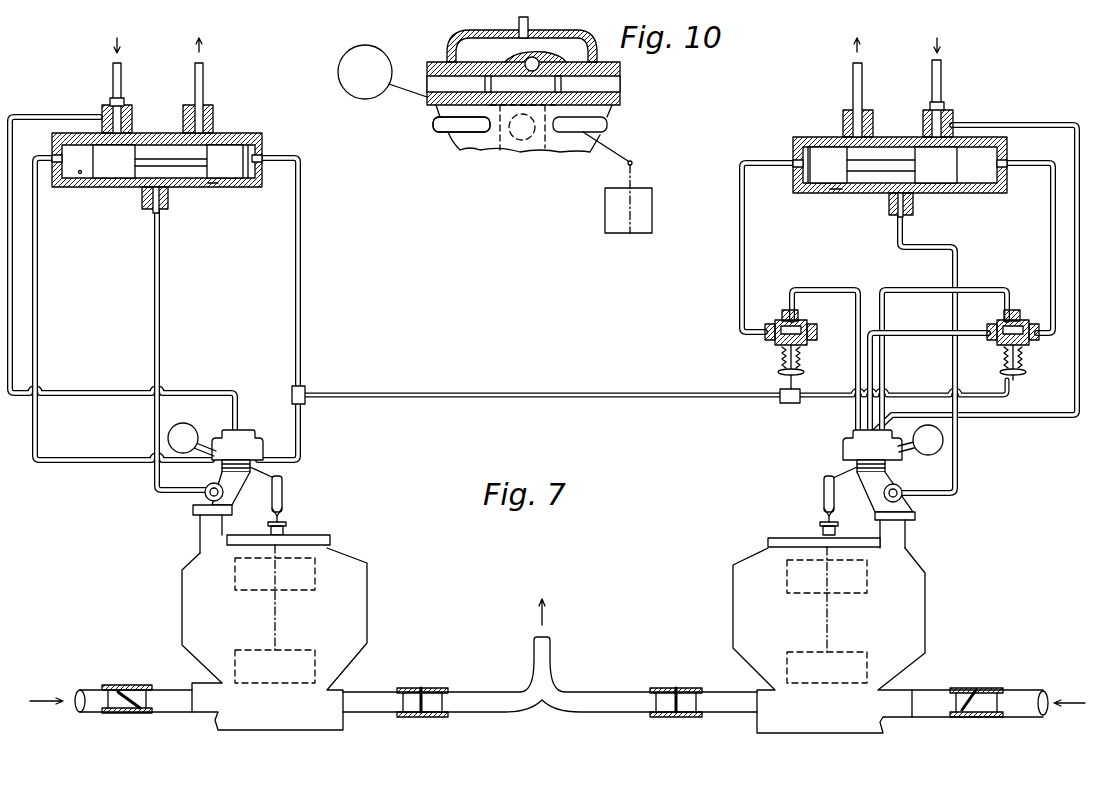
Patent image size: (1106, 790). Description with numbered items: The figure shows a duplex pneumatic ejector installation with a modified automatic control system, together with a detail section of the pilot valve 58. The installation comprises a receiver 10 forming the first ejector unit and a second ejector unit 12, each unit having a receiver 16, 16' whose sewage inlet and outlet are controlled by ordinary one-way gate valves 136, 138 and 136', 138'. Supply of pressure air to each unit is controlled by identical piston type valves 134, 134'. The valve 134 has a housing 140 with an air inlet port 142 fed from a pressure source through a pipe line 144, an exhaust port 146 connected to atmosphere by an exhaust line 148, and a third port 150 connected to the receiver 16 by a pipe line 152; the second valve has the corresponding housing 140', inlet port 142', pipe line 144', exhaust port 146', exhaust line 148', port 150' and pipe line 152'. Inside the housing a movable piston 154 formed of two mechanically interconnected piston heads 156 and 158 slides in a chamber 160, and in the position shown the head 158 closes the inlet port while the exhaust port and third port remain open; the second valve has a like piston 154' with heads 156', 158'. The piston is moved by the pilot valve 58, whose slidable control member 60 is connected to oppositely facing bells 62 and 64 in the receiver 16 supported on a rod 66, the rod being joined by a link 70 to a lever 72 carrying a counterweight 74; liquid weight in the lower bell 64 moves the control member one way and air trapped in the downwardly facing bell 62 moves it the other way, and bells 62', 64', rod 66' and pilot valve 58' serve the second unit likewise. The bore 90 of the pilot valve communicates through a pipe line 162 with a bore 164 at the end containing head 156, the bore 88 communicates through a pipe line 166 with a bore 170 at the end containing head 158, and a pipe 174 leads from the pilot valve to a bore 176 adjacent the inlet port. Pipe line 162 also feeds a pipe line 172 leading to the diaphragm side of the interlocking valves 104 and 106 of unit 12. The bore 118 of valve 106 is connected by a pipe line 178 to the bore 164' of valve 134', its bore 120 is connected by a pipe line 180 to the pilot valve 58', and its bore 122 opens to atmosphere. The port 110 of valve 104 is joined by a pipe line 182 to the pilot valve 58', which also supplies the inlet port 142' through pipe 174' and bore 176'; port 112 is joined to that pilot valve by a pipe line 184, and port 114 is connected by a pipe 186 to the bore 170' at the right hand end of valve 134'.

In FIG. 7, the receiver 10 is at (336, 611).
In FIG. 7, the ejector unit 12 is at (894, 635).
In FIG. 7, the receiver 16 is at (256, 638).
In FIG. 7, the receiver 16' is at (846, 637).
In FIG. 7, the pilot valve 58 is at (232, 471).
In FIG. 7, the pilot valve 58' is at (865, 486).
In FIG. 10, the slidable control member 60 is at (512, 58).
In FIG. 7, the downwardly facing bell 62 is at (256, 577).
In FIG. 10, the downwardly facing bell 62 is at (646, 199).
In FIG. 7, the downwardly facing bell 62' is at (848, 576).
In FIG. 7, the lower bell 64 is at (292, 657).
In FIG. 7, the lower bell 64' is at (812, 656).
In FIG. 7, the rod 66 is at (257, 597).
In FIG. 7, the rod 66' is at (848, 599).
In FIG. 7, the link 70 is at (283, 496).
In FIG. 7, the lever 72 is at (205, 436).
In FIG. 7, the counterweight 74 is at (190, 423).
In FIG. 10, the counterweight 74 is at (366, 99).
In FIG. 10, the bore 88 is at (503, 142).
In FIG. 10, the bore 90 is at (606, 116).
In FIG. 7, the interlocking valve 104 is at (1029, 364).
In FIG. 7, the interlocking valve 106 is at (775, 368).
In FIG. 7, the port 110 is at (990, 330).
In FIG. 7, the port 112 is at (1014, 312).
In FIG. 7, the port 114 is at (1030, 342).
In FIG. 7, the bore 118 is at (763, 338).
In FIG. 7, the bore 120 is at (784, 312).
In FIG. 7, the bore 122 is at (808, 328).
In FIG. 7, the piston type valve 134 is at (166, 138).
In FIG. 7, the piston type valve 134' is at (898, 143).
In FIG. 7, the one-way gate valve 136 is at (138, 682).
In FIG. 7, the one-way gate valve 136' is at (988, 684).
In FIG. 7, the one-way gate valve 138 is at (432, 684).
In FIG. 7, the one-way gate valve 138' is at (681, 684).
In FIG. 7, the housing 140 is at (226, 198).
In FIG. 7, the housing 140' is at (828, 205).
In FIG. 7, the air inlet port 142 is at (137, 91).
In FIG. 7, the air inlet port 142' is at (960, 94).
In FIG. 7, the pipe line 144 is at (93, 85).
In FIG. 7, the pipe line 144' is at (961, 87).
In FIG. 7, the exhaust port 146 is at (213, 106).
In FIG. 7, the exhaust port 146' is at (878, 109).
In FIG. 7, the exhaust line 148 is at (222, 85).
In FIG. 7, the exhaust line 148' is at (878, 87).
In FIG. 7, the third port 150 is at (174, 208).
In FIG. 7, the third port 150' is at (918, 214).
In FIG. 7, the pipe line 152 is at (182, 350).
In FIG. 7, the pipe line 152' is at (954, 355).
In FIG. 7, the movable piston 154 is at (114, 161).
In FIG. 7, the movable piston 154' is at (936, 165).
In FIG. 7, the piston head 156 is at (189, 163).
In FIG. 7, the piston head 156' is at (862, 165).
In FIG. 7, the piston head 158 is at (171, 152).
In FIG. 7, the piston head 158' is at (920, 170).
In FIG. 7, the chamber 160 is at (80, 175).
In FIG. 7, the pipe line 162 is at (300, 302).
In FIG. 10, the pipe line 162 is at (604, 136).
In FIG. 7, the bore 164 is at (278, 147).
In FIG. 7, the bore 164' is at (775, 151).
In FIG. 7, the pipe line 166 is at (39, 302).
In FIG. 10, the pipe line 166 is at (445, 133).
In FIG. 7, the bore 170 is at (39, 147).
In FIG. 7, the bore 170' is at (1021, 151).
In FIG. 7, the pipe line 172 is at (410, 393).
In FIG. 7, the pipe 174 is at (122, 274).
In FIG. 10, the pipe 174 is at (546, 26).
In FIG. 7, the pipe 174' is at (973, 283).
In FIG. 7, the bore 176 is at (99, 111).
In FIG. 7, the bore 176' is at (965, 117).
In FIG. 7, the pipe line 178 is at (740, 240).
In FIG. 7, the pipe line 180 is at (826, 288).
In FIG. 7, the pipe line 182 is at (903, 338).
In FIG. 7, the pipe line 184 is at (930, 288).
In FIG. 7, the pipe 186 is at (1050, 214).